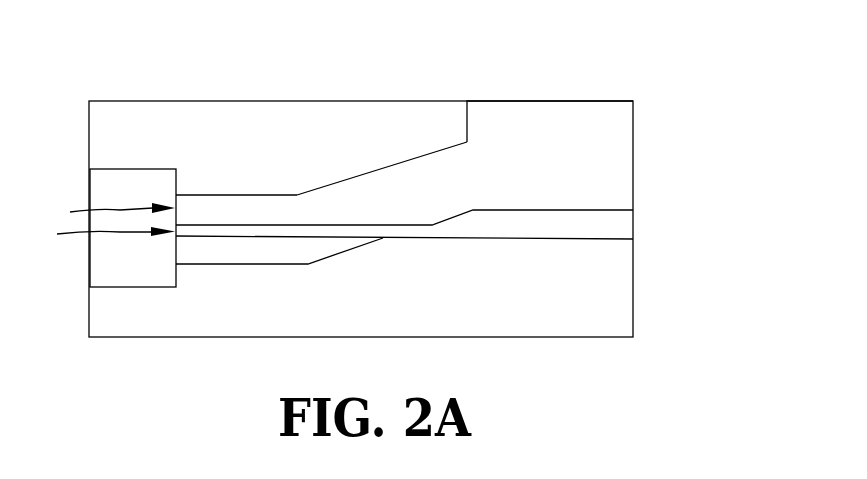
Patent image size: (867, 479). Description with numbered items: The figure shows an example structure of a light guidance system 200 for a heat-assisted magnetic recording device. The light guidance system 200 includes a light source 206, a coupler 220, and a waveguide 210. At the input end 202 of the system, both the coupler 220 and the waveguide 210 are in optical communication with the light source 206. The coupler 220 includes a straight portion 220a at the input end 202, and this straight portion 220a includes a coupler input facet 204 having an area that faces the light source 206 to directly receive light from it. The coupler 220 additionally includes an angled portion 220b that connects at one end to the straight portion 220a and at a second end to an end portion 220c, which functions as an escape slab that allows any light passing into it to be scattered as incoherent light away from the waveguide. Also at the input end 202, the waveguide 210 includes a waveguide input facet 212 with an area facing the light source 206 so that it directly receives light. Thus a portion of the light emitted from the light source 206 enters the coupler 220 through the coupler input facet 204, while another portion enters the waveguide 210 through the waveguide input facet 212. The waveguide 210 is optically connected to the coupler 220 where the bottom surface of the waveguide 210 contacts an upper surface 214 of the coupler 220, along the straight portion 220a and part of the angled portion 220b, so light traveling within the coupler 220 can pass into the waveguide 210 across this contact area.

The light guidance system 200 is at (596, 50).
The input end 202 is at (209, 326).
The coupler input facet 204 is at (103, 208).
The light source 206 is at (108, 265).
The waveguide 210 is at (612, 232).
The waveguide input facet 212 is at (96, 233).
The upper surface of coupler 214 is at (279, 251).
The coupler 220 is at (432, 124).
The straight portion 220a is at (292, 189).
The angled portion 220b is at (303, 187).
The end portion 220c is at (633, 99).